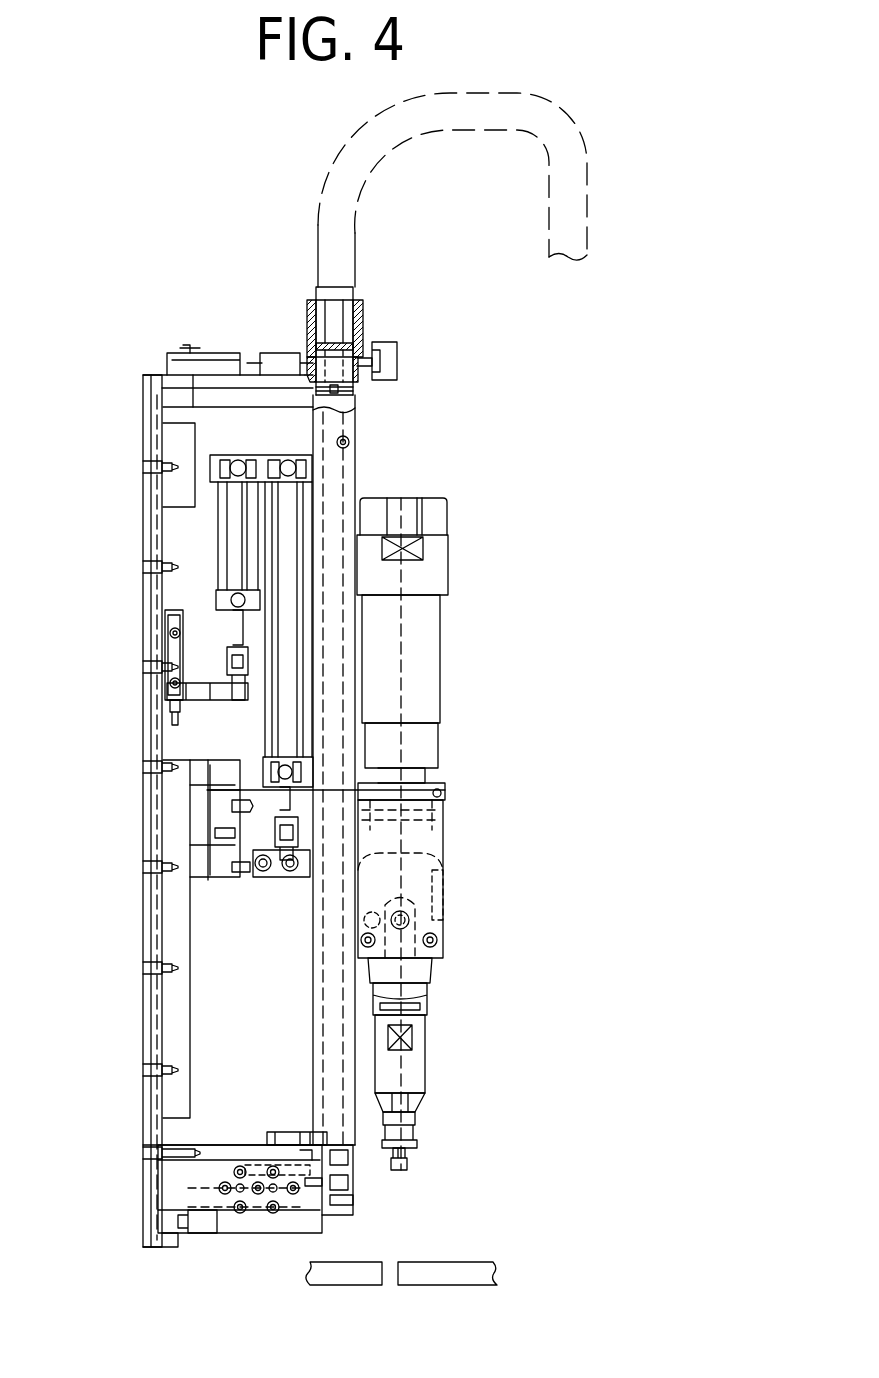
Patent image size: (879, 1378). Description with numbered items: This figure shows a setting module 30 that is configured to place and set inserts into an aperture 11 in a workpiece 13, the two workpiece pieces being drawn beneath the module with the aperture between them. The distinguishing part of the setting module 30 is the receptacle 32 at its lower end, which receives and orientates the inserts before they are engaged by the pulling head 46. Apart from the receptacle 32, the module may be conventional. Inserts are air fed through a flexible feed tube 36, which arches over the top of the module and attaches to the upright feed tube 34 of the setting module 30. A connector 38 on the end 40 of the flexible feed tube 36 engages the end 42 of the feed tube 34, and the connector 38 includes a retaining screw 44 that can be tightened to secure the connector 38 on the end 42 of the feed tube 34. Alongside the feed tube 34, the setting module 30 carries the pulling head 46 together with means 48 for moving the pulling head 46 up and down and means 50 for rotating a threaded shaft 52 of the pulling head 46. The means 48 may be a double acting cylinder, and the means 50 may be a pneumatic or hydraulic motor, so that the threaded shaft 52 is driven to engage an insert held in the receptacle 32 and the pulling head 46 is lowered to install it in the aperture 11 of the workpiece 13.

The aperture 11 is at (392, 1290).
The workpiece 13 is at (326, 1292).
The setting module 30 is at (95, 555).
The receptacle 32 is at (353, 1207).
The feed tube 34 is at (357, 445).
The flexible feed tube 36 is at (405, 150).
The connector 38 is at (363, 320).
The end of flexible feed tube 40 is at (323, 323).
The end of feed tube 42 is at (355, 383).
The retaining screw 44 is at (397, 365).
The pulling head 46 is at (468, 738).
The means for moving the pulling head up and down 48 is at (248, 720).
The means for rotating the threaded shaft 50 is at (447, 505).
The threaded shaft 52 is at (405, 1150).